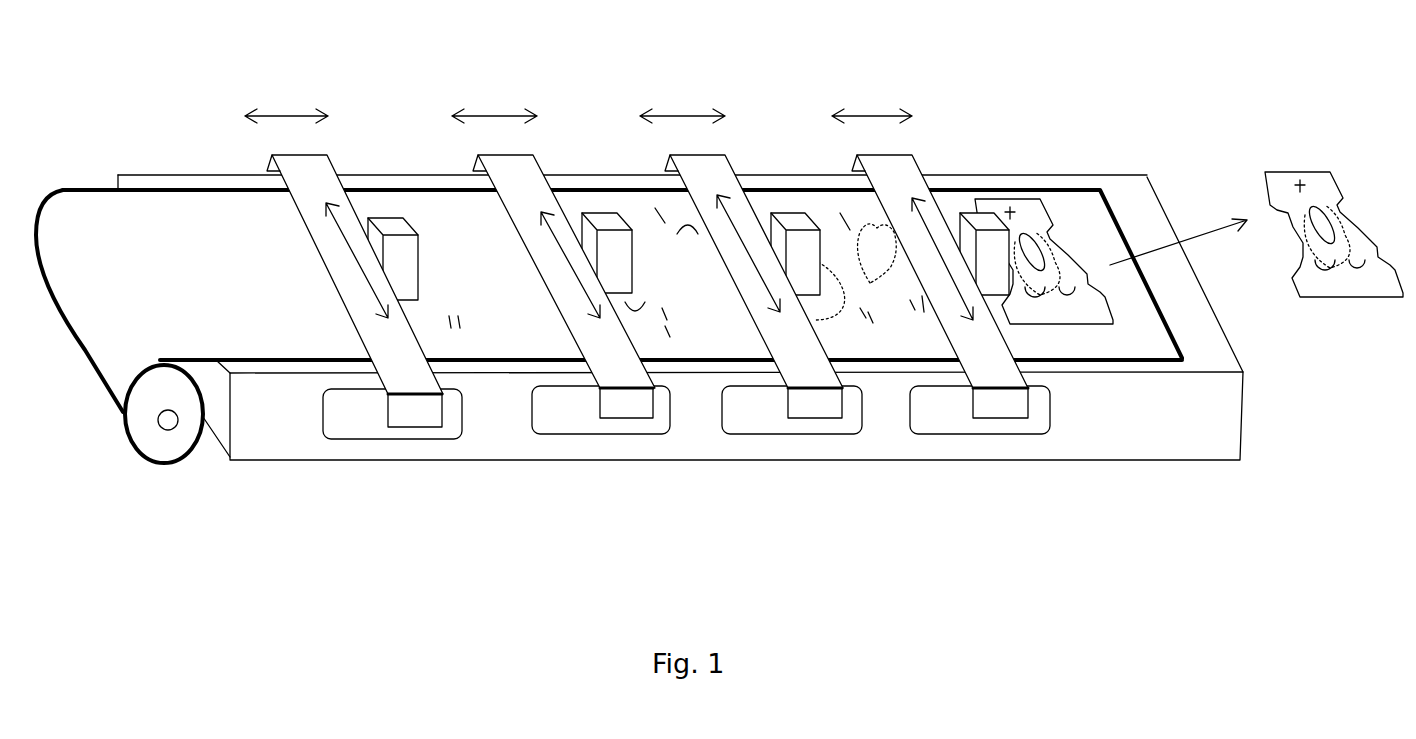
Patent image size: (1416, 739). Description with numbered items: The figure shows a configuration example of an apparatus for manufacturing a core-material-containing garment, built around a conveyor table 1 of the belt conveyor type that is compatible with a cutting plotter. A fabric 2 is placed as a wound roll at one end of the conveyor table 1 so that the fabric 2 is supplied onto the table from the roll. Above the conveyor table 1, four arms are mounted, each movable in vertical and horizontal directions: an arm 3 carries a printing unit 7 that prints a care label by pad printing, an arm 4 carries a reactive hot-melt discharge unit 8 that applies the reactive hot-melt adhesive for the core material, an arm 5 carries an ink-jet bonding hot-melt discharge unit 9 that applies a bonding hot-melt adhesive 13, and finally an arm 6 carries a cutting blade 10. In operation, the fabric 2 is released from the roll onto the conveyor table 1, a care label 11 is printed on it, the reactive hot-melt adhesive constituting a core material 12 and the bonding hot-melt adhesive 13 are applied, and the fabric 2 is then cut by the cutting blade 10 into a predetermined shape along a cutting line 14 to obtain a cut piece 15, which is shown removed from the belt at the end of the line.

The conveyor table 1 is at (283, 433).
The fabric 2 is at (78, 223).
The arm 3 is at (418, 417).
The arm 4 is at (637, 408).
The arm 5 is at (823, 413).
The arm 6 is at (1008, 408).
The printing unit 7 is at (385, 220).
The reactive hot-melt discharge unit 8 is at (597, 213).
The ink-jet bonding hot-melt discharge unit 9 is at (790, 212).
The cutting blade 10 is at (968, 212).
The care label 11 is at (468, 338).
The core material 12 is at (662, 313).
The bonding hot-melt adhesive 13 is at (888, 265).
The cutting line 14 is at (1080, 323).
The cut piece 15 is at (1277, 172).